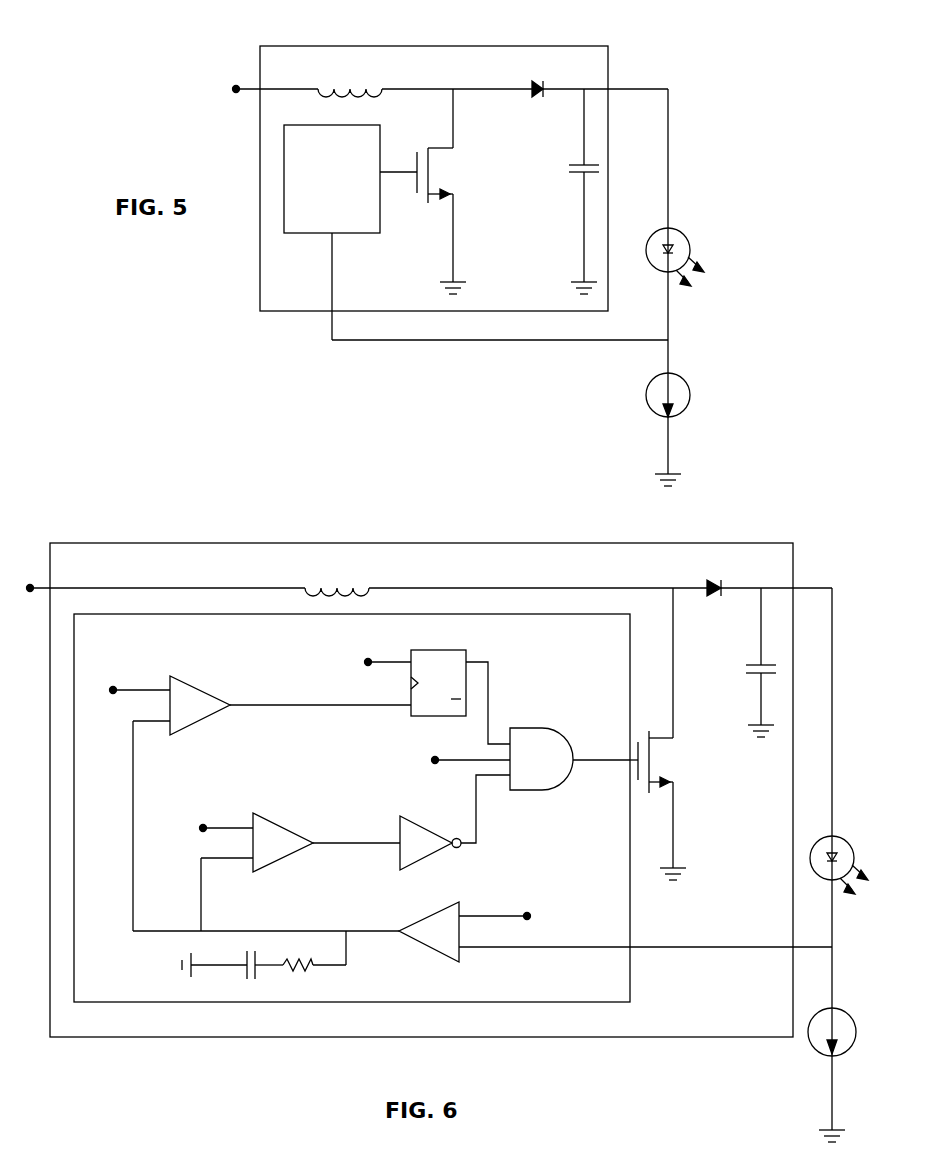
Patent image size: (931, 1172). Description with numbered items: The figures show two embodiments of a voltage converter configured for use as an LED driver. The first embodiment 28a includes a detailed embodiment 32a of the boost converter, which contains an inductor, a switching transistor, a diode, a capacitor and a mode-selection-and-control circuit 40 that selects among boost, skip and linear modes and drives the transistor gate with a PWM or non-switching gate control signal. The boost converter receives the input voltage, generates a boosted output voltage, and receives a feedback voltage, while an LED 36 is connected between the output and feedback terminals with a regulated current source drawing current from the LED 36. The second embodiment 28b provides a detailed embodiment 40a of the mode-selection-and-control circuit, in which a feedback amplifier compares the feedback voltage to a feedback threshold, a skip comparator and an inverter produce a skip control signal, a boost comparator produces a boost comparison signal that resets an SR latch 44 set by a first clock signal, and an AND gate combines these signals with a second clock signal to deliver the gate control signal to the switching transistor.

In FIG. 5, the voltage converter embodiment 28a is at (168, 40).
In FIG. 6, the voltage converter circuit embodiment 28b is at (96, 474).
In FIG. 5, the boost converter embodiment 32a is at (414, 74).
In FIG. 6, the boost converter embodiment 32a is at (213, 574).
In FIG. 5, the LED 36 is at (685, 233).
In FIG. 6, the LED 36 is at (852, 840).
In FIG. 5, the mode-selection-and-control circuit 40 is at (368, 231).
In FIG. 6, the mode-selection-and-control circuit embodiment 40a is at (228, 659).
In FIG. 6, the SR latch 44 is at (455, 651).